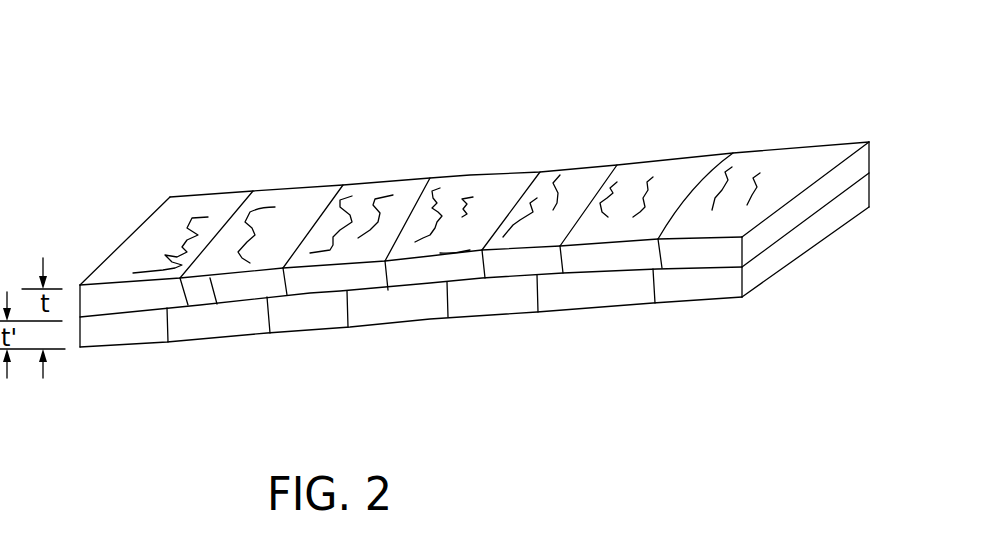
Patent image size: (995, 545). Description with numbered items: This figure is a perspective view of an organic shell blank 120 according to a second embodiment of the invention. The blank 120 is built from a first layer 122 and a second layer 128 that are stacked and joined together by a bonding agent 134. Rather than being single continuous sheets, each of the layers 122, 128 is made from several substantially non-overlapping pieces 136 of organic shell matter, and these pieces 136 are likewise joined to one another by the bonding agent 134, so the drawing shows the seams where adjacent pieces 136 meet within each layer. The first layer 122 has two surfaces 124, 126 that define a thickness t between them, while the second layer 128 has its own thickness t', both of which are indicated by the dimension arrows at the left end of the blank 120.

The blank 120 is at (193, 122).
The first layer 122 is at (140, 256).
The surface 124 is at (180, 278).
The surface 126 is at (210, 278).
The second layer 128 is at (117, 332).
The bonding agent 134 is at (390, 279).
The pieces 136 is at (368, 205).